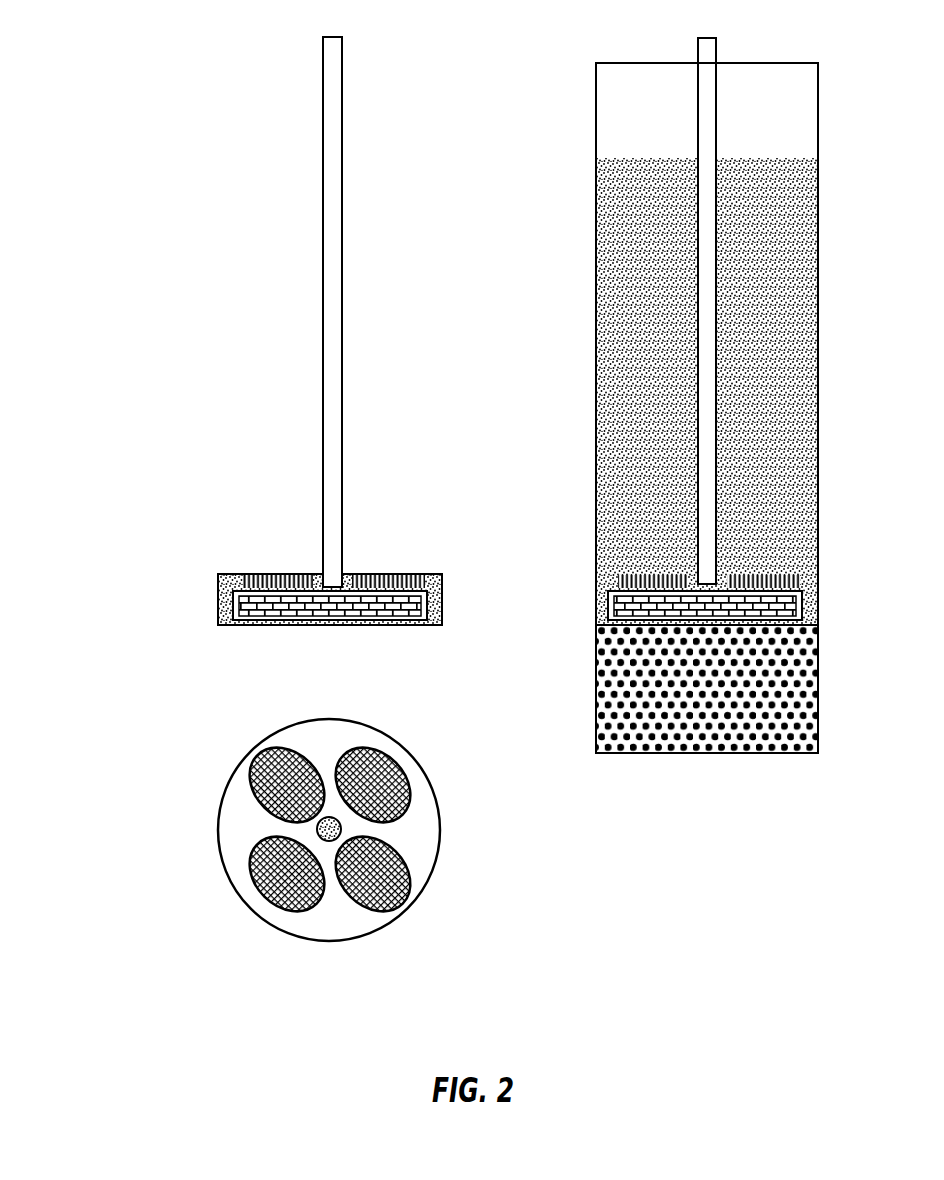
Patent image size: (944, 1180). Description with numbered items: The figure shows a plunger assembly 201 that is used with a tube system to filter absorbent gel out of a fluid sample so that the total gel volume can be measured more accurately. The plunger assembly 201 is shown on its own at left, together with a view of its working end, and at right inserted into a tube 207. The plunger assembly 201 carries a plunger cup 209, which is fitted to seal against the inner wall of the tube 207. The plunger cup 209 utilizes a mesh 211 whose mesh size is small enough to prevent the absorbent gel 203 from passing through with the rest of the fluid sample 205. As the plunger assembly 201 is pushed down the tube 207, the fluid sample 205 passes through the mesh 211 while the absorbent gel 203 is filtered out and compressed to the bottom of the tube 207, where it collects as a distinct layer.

The plunger assembly 201 is at (158, 27).
The absorbent gel 203 is at (802, 690).
The fluid sample 205 is at (800, 376).
The tube 207 is at (686, 395).
The plunger cup 209 is at (210, 594).
The mesh 211 is at (272, 788).